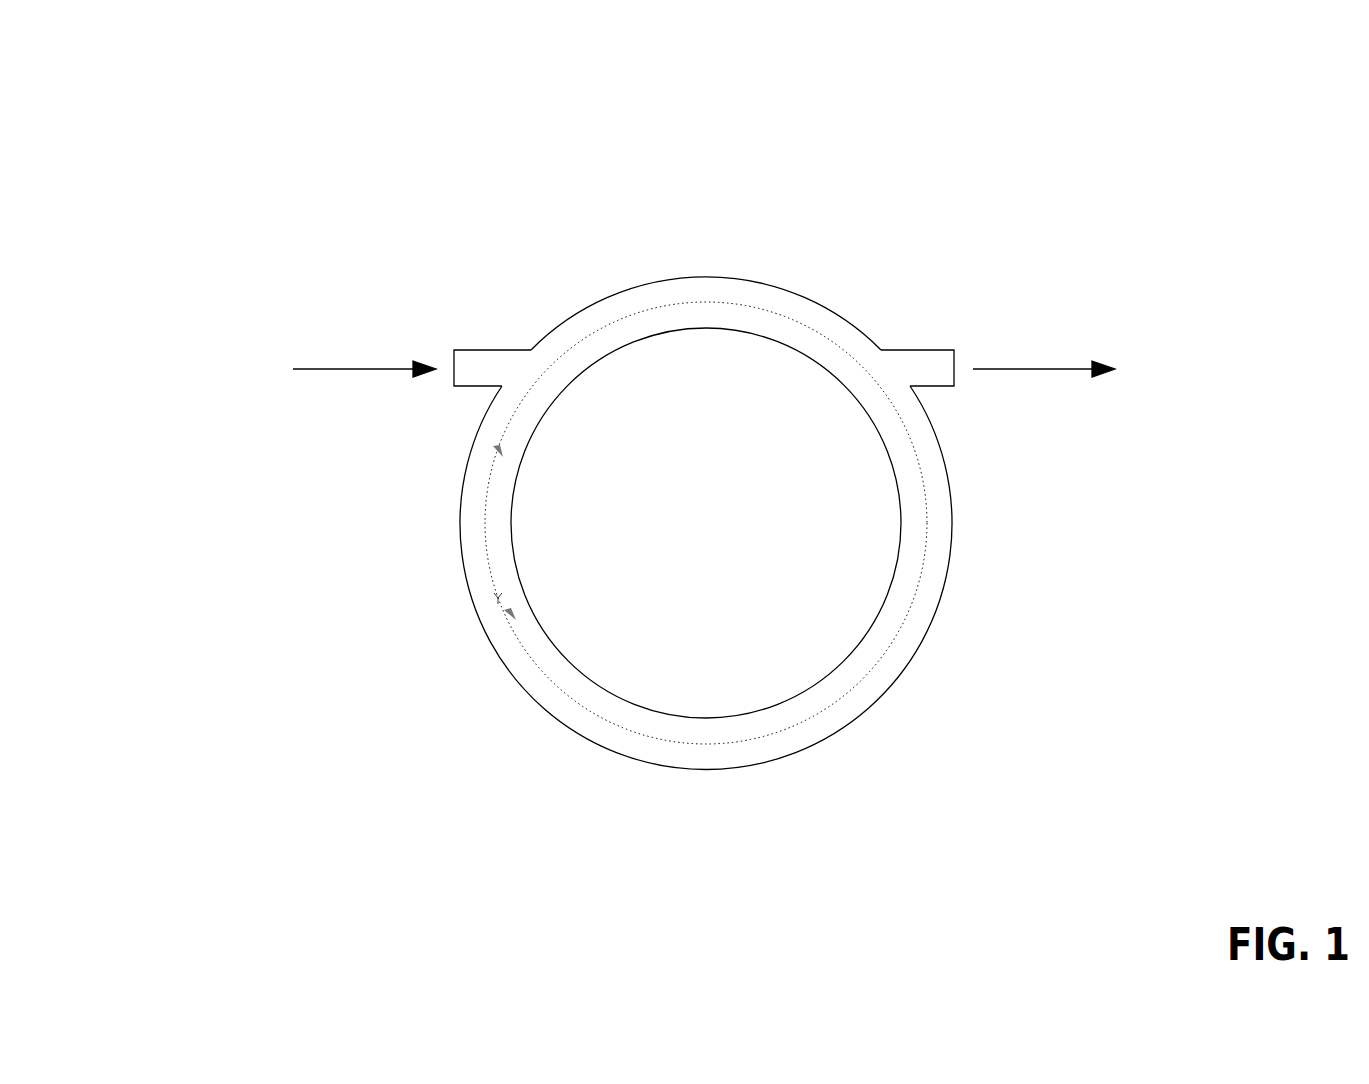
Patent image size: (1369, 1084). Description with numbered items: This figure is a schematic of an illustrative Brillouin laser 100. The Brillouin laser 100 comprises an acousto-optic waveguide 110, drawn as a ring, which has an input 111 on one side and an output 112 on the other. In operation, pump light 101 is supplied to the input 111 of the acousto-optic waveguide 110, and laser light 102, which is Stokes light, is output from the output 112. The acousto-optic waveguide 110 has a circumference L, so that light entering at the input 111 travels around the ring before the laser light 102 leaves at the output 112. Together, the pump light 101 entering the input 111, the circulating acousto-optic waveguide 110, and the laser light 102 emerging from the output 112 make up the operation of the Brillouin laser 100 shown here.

The Brillouin laser 100 is at (110, 66).
The pump light 101 is at (197, 364).
The laser (Stokes) light 102 is at (1179, 365).
The acousto-optic waveguide 110 is at (452, 777).
The input 111 is at (429, 225).
The output 112 is at (976, 225).